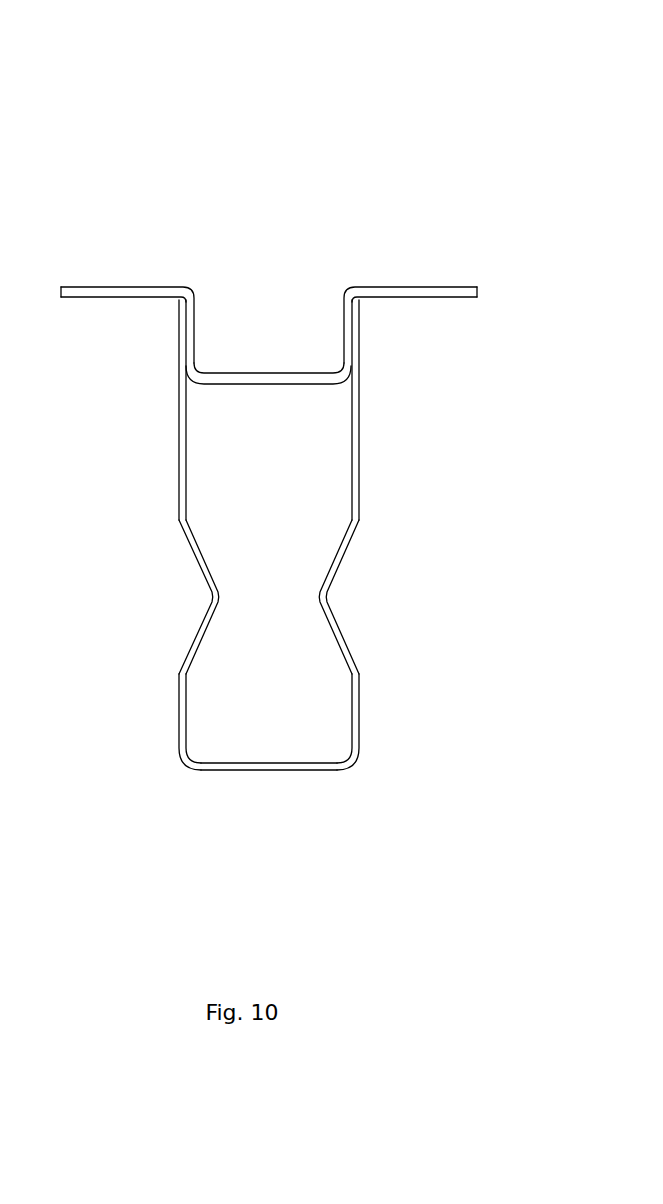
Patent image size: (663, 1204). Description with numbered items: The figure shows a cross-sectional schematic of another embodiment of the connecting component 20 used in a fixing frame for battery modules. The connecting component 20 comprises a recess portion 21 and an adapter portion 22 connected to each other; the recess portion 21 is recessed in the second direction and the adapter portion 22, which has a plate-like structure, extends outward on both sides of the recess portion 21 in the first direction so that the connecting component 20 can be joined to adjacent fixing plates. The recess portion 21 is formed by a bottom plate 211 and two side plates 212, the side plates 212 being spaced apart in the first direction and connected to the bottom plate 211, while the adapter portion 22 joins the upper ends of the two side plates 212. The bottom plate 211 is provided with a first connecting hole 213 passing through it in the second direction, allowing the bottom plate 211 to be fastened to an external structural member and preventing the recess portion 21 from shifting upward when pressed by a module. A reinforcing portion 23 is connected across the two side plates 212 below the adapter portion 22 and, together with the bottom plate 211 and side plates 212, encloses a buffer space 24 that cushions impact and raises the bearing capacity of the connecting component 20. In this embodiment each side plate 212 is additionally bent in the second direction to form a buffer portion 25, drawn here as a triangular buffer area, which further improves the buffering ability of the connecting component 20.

The connecting component 20 is at (303, 63).
The recess portion 21 is at (243, 815).
The bottom plate 211 is at (222, 770).
The side plates 212 is at (182, 730).
The first connecting hole 213 is at (272, 765).
The adapter portion 22 is at (137, 287).
The reinforcing portion 23 is at (250, 380).
The buffer space 24 is at (320, 498).
The buffer portion 25 is at (212, 597).